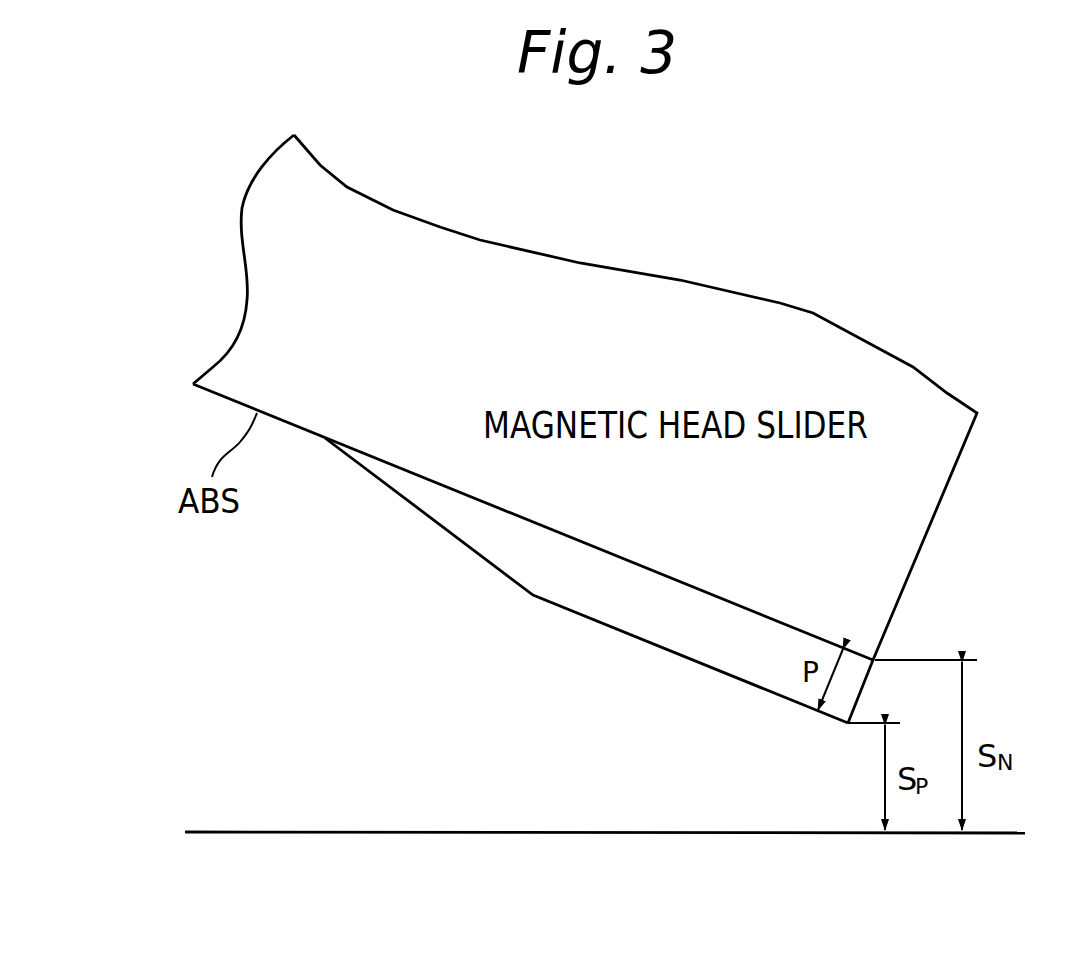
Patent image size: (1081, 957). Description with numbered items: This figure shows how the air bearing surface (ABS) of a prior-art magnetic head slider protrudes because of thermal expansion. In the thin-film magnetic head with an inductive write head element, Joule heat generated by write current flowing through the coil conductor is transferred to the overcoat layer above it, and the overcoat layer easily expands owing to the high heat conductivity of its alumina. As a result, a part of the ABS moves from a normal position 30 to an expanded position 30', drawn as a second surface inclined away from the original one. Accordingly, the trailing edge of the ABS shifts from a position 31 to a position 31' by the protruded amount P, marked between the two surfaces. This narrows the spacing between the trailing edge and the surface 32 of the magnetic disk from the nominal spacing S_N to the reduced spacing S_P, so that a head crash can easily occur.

The normal position 30 is at (533, 522).
The expanded position 30' is at (586, 580).
The position of the trailing edge 31 is at (936, 616).
The position of the trailing edge 31' is at (843, 768).
The surface of the magnetic disk 32 is at (1003, 835).